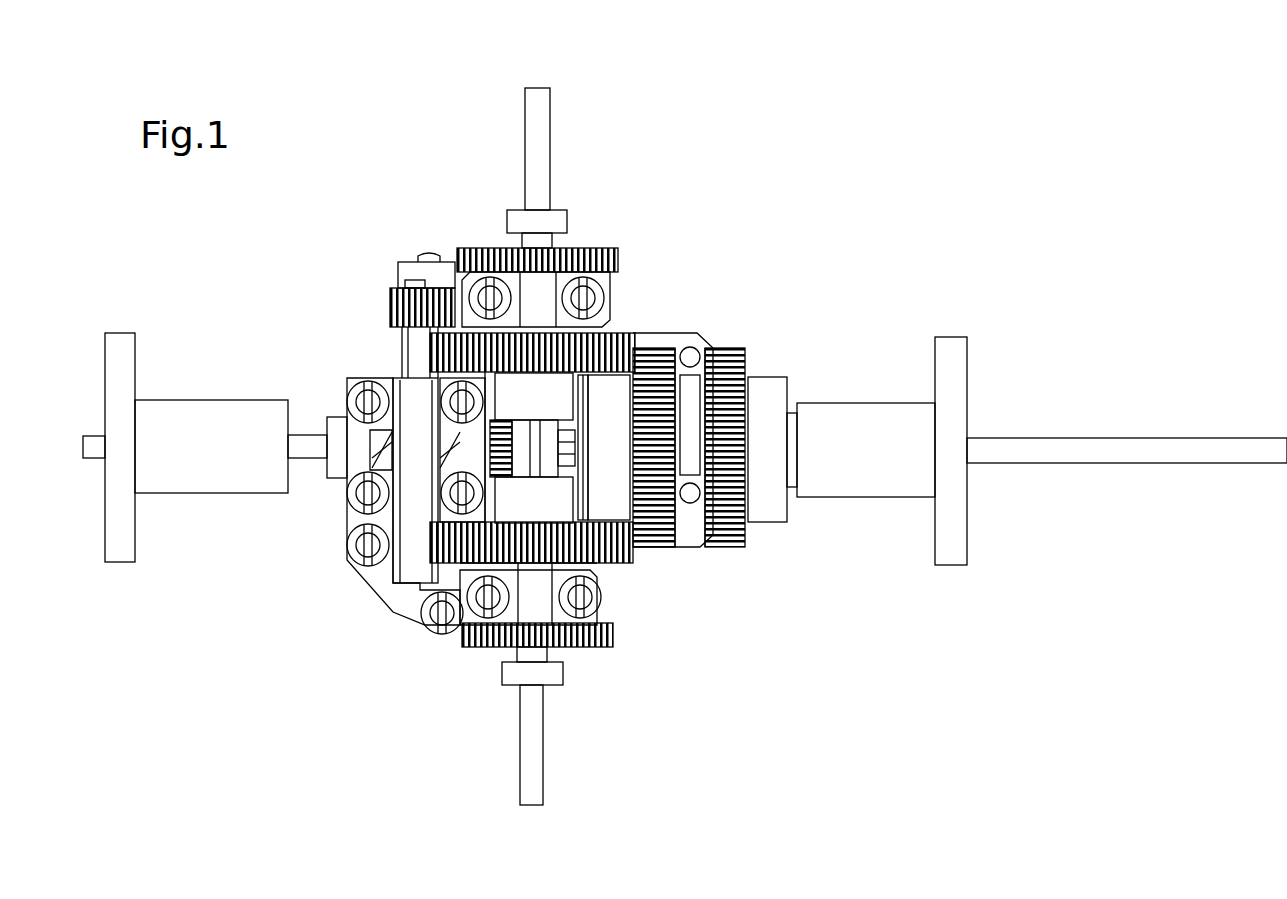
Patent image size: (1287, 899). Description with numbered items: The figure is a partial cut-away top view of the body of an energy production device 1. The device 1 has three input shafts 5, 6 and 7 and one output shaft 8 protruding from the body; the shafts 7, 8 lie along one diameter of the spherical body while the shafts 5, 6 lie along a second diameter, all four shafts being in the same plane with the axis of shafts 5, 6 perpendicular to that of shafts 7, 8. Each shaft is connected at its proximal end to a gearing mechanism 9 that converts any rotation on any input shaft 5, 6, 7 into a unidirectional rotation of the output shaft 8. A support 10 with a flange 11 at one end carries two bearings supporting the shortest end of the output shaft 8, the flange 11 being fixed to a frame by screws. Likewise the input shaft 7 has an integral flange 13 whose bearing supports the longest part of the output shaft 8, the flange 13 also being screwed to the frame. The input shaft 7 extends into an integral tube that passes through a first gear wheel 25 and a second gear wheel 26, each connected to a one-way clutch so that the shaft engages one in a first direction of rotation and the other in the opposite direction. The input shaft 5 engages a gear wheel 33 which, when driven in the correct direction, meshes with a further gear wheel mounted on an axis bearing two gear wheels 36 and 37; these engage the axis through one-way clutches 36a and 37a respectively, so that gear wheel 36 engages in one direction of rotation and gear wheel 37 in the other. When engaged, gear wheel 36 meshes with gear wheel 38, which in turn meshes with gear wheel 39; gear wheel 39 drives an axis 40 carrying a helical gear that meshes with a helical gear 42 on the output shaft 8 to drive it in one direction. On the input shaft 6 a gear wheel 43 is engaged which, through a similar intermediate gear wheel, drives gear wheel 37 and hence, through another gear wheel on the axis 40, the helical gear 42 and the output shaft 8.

The energy production device 1 is at (746, 250).
The input shaft 5 is at (550, 88).
The input shaft 6 is at (547, 738).
The input shaft 7 is at (862, 403).
The output shaft 8 is at (1178, 438).
The gearing mechanism 9 is at (455, 458).
The support 10 is at (218, 400).
The flange 11 is at (120, 333).
The flange 13 is at (960, 337).
The first gear wheel 25 is at (728, 350).
The second gear wheel 26 is at (655, 350).
The gear wheel 33 is at (590, 248).
The gear wheel 36 is at (440, 350).
The one-way clutch 36a is at (555, 388).
The gear wheel 37 is at (432, 548).
The one-way clutch 37a is at (550, 508).
The gear wheel 38 is at (457, 290).
The gear wheel 39 is at (395, 308).
The axis 40 is at (412, 282).
The helical gear 42 is at (360, 380).
The gear wheel 43 is at (478, 648).